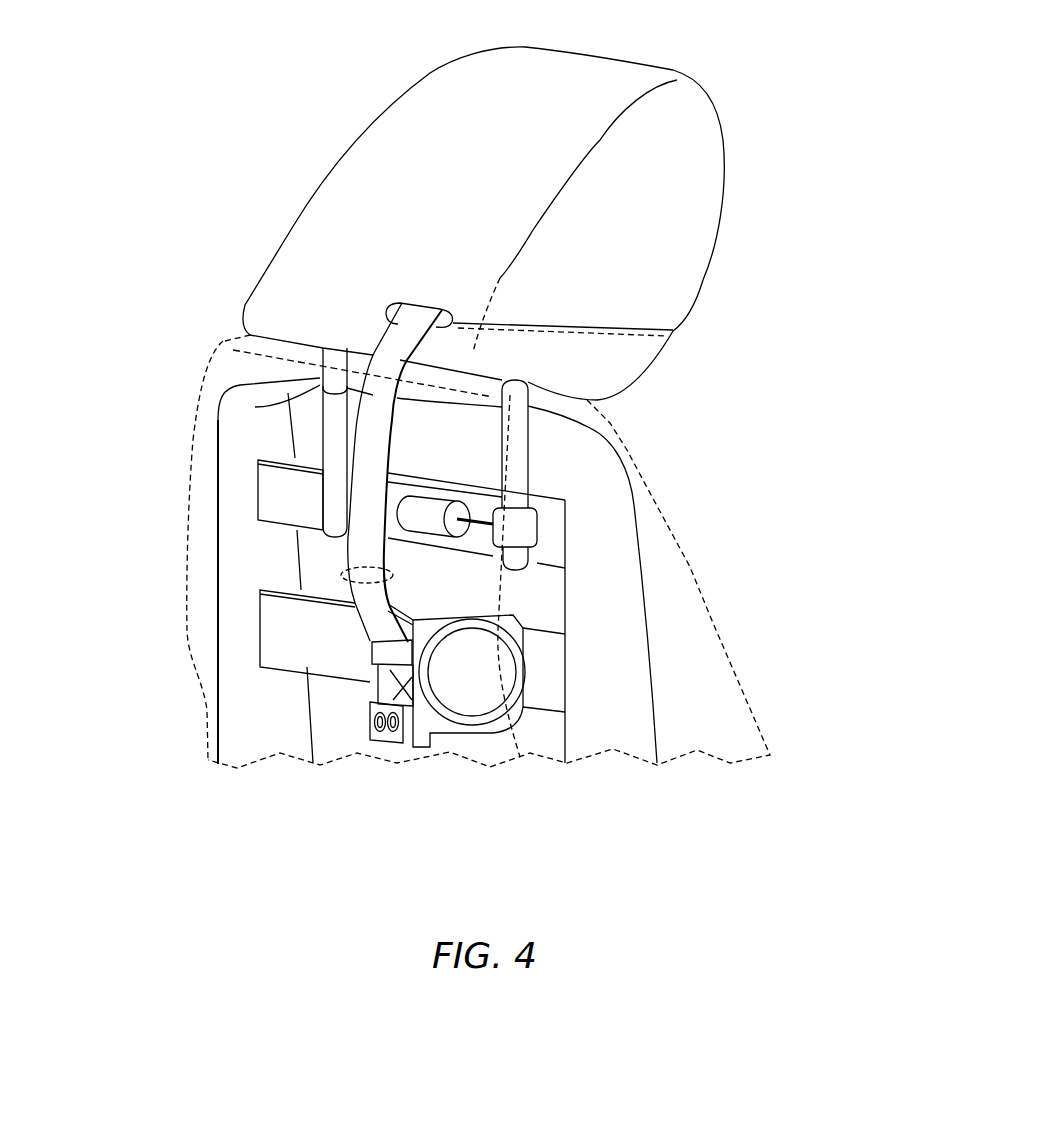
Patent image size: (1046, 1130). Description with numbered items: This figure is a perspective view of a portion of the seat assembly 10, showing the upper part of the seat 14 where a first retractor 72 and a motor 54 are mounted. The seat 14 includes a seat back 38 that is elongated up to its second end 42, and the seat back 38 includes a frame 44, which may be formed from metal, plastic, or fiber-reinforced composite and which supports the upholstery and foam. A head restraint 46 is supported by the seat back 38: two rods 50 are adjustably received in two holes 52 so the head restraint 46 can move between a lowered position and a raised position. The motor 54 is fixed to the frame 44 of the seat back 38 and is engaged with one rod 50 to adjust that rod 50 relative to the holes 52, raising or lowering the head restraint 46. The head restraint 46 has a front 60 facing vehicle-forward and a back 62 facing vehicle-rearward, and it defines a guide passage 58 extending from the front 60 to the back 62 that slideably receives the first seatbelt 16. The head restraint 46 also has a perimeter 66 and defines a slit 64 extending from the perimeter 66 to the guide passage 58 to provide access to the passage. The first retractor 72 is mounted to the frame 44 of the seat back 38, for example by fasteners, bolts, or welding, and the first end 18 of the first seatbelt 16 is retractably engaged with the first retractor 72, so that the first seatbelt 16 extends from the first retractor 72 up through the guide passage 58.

The seat assembly 10 is at (247, 132).
The seat 14 is at (100, 370).
The first seatbelt 16 is at (386, 332).
The first end 18 is at (408, 680).
The seat back 38 is at (713, 623).
The second end 42 is at (223, 340).
The frame 44 is at (252, 548).
The head restraint 46 is at (727, 167).
The rods 50 is at (322, 368).
The holes 52 is at (255, 407).
The motor 54 is at (430, 497).
The guide passage 58 is at (403, 302).
The front 60 is at (795, 92).
The back 62 is at (478, 180).
The slit 64 is at (677, 333).
The perimeter 66 is at (690, 306).
The first retractor 72 is at (477, 725).